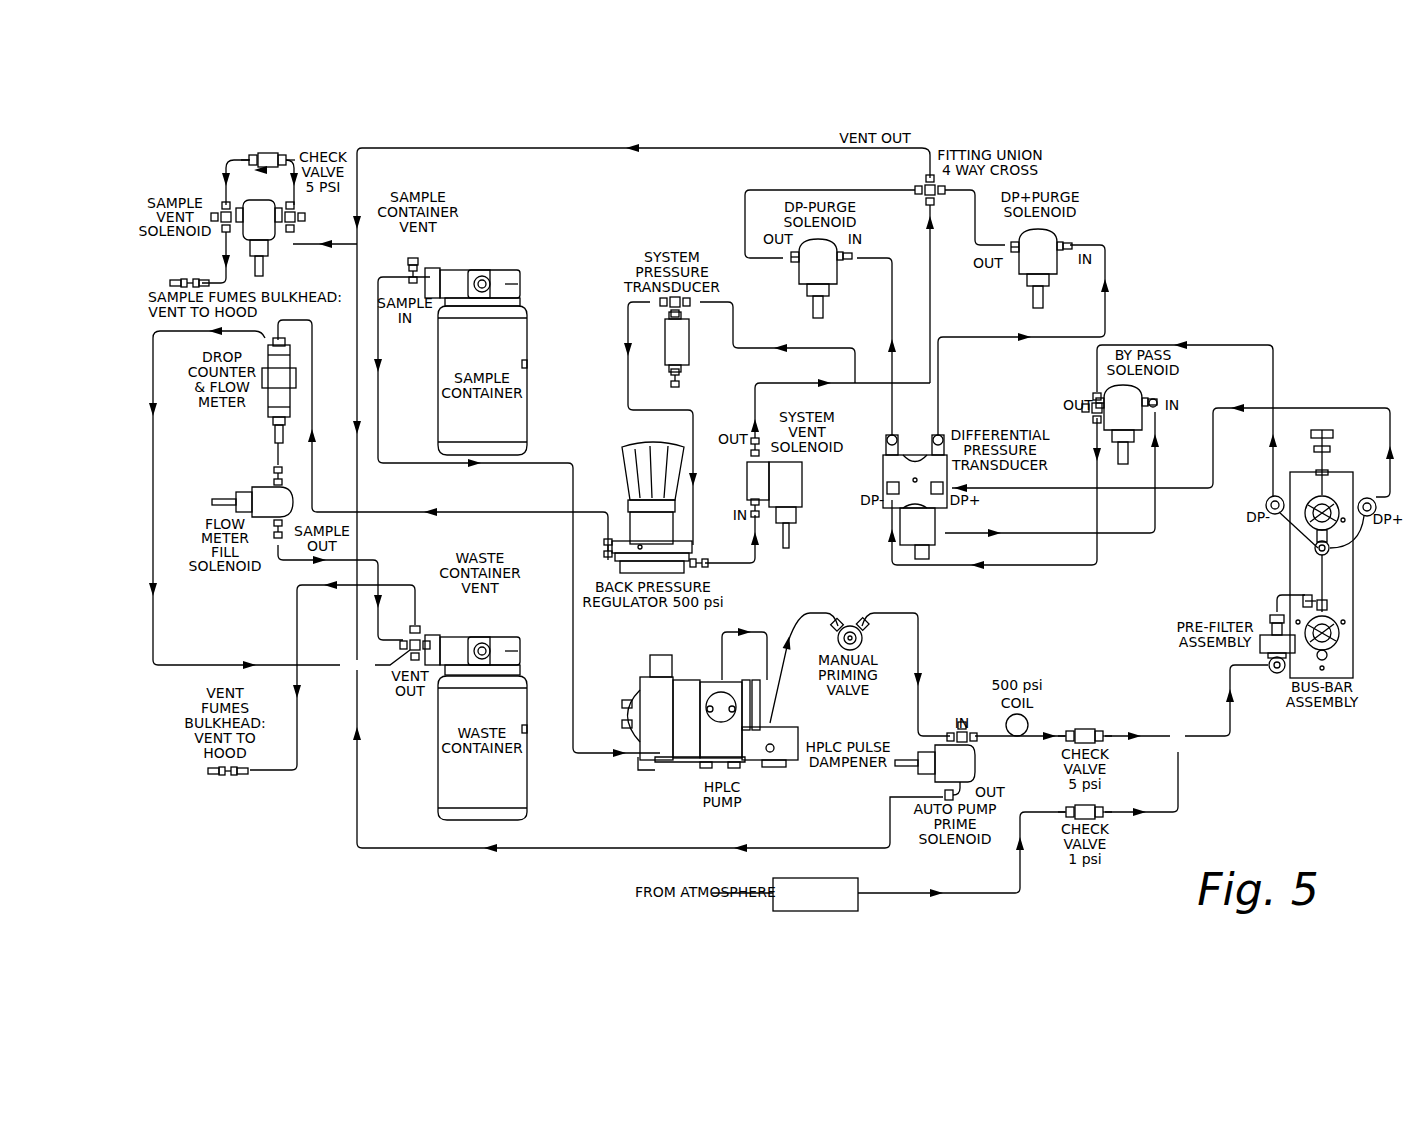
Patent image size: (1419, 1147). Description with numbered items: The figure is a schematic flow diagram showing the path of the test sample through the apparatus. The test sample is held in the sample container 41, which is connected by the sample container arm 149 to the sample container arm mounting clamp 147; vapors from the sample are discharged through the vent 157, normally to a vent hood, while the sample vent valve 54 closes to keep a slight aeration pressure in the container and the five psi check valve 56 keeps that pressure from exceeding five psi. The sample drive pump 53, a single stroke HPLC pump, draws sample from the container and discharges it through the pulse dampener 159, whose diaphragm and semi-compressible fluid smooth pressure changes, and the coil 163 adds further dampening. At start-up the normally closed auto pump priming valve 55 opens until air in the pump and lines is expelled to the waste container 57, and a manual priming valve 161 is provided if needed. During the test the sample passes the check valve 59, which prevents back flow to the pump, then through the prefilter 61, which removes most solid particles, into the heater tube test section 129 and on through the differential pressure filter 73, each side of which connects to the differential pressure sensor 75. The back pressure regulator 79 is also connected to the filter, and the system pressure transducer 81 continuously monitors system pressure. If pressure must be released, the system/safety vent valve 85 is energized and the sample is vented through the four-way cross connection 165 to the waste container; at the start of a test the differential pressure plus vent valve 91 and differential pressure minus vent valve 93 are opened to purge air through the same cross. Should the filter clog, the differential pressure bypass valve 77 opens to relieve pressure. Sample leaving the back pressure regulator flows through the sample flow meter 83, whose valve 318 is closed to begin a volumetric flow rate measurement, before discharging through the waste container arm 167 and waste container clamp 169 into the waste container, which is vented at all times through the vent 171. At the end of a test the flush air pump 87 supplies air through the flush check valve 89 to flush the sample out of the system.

The 5 psi check valve 56 is at (265, 155).
The sample vent valve 54 is at (278, 240).
The vent 157 is at (192, 276).
The sample container arm mounting clamp 147 is at (432, 270).
The sample container arm 149 is at (505, 272).
The sample container 41 is at (530, 383).
The sample flow meter 83 is at (268, 408).
The valve 318 is at (258, 487).
The waste container clamp 169 is at (432, 637).
The waste container arm 167 is at (505, 637).
The waste container 57 is at (438, 730).
The vent 171 is at (228, 778).
The system pressure transducer 81 is at (690, 338).
The differential pressure minus vent valve 93 is at (831, 272).
The four-way cross connection 165 is at (922, 205).
The differential pressure plus vent valve 91 is at (1051, 262).
The differential pressure bypass valve 77 is at (1136, 418).
The back pressure regulator 79 is at (642, 445).
The system/safety vent valve 85 is at (802, 482).
The differential pressure sensor 75 is at (916, 452).
The manual priming valve 161 is at (848, 622).
The sample drive pump 53 is at (678, 768).
The pulse dampener 159 is at (795, 770).
The coil 163 is at (1030, 722).
The auto pump priming valve 55 is at (982, 762).
The check valve 59 is at (1090, 726).
The flush check valve 89 is at (1102, 802).
The flush air pump 87 is at (842, 878).
The heater tube test section 129 is at (1296, 578).
The differential pressure filter 73 is at (1315, 551).
The prefilter 61 is at (1268, 630).